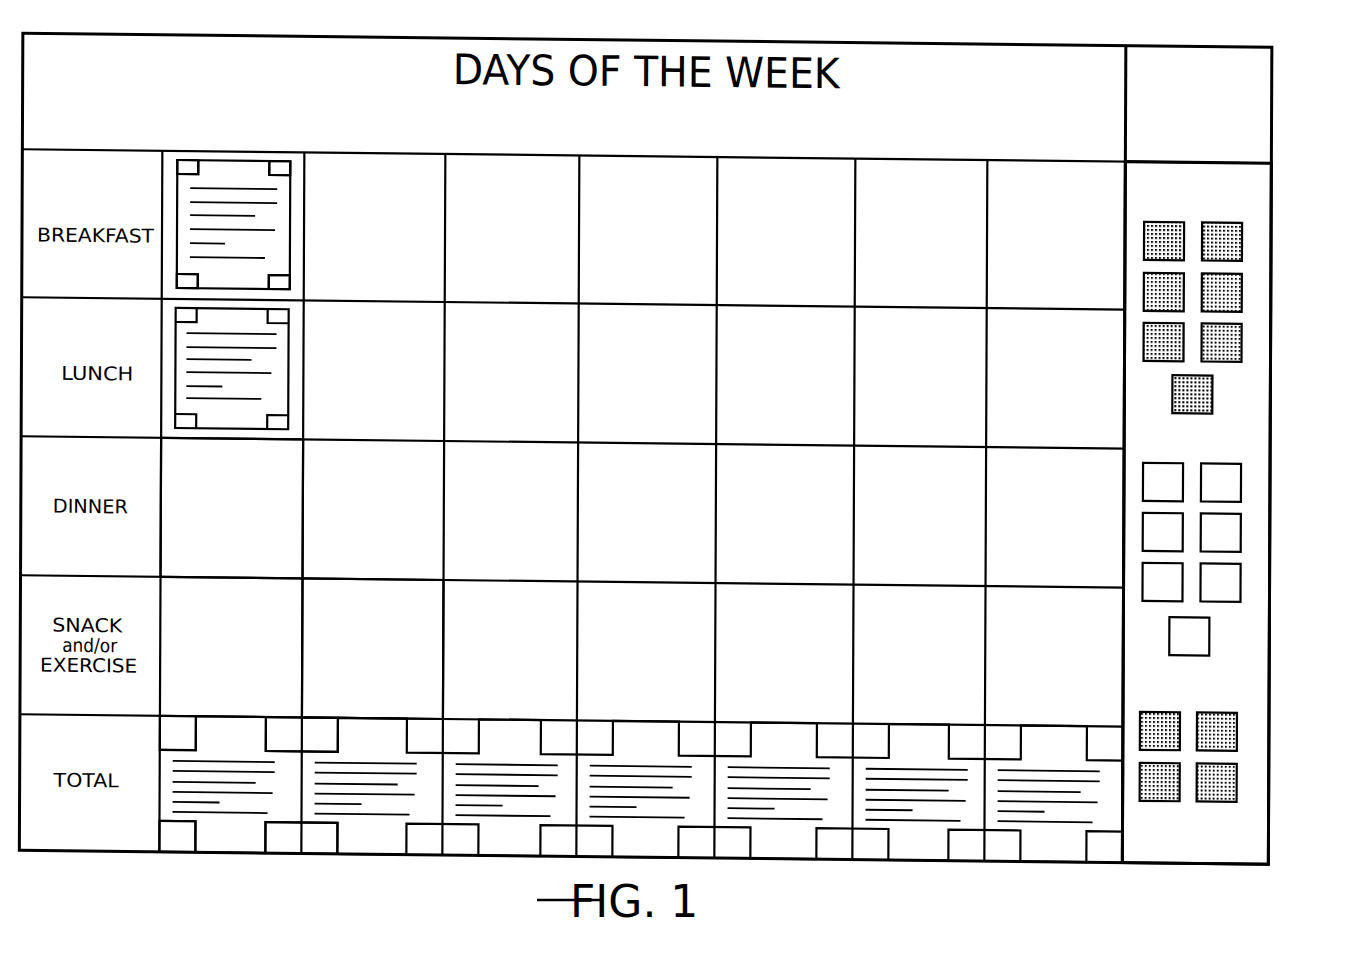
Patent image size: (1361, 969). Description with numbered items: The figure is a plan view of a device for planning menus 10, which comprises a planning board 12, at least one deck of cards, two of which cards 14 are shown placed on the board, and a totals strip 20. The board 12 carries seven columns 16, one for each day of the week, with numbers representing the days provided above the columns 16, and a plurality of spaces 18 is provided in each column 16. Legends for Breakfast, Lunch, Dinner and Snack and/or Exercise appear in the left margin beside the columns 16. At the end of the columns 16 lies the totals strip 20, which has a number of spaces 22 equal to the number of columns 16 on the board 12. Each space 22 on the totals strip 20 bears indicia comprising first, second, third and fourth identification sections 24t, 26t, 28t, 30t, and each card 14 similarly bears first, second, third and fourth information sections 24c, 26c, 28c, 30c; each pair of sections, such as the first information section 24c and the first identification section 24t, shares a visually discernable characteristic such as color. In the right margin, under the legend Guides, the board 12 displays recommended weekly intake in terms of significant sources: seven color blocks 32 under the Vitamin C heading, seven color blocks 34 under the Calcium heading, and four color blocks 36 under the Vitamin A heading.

The device for planning menus 10 is at (1227, 483).
The planning board 12 is at (1272, 92).
The cards 14 is at (290, 216).
The columns 16 is at (315, 152).
The spaces 18 is at (230, 526).
The totals strip 20 is at (157, 796).
The spaces 22 is at (633, 717).
The first information section 24c is at (188, 158).
The second information section 26c is at (292, 167).
The third information section 28c is at (290, 282).
The fourth information section 30c is at (177, 281).
The first identification section 24t is at (175, 727).
The second identification section 26t is at (282, 713).
The third identification section 28t is at (282, 847).
The fourth identification section 30t is at (177, 843).
The color blocks 32 is at (1240, 245).
The color blocks 34 is at (1238, 482).
The color blocks 36 is at (1237, 737).